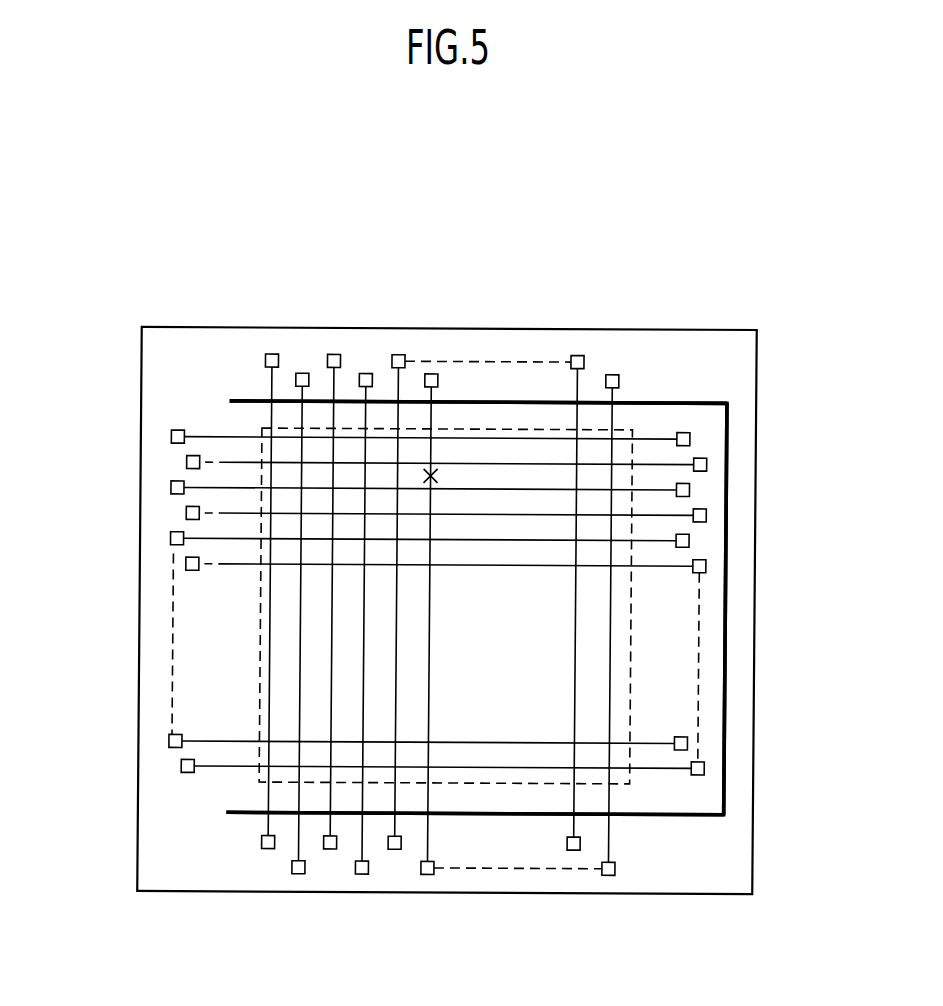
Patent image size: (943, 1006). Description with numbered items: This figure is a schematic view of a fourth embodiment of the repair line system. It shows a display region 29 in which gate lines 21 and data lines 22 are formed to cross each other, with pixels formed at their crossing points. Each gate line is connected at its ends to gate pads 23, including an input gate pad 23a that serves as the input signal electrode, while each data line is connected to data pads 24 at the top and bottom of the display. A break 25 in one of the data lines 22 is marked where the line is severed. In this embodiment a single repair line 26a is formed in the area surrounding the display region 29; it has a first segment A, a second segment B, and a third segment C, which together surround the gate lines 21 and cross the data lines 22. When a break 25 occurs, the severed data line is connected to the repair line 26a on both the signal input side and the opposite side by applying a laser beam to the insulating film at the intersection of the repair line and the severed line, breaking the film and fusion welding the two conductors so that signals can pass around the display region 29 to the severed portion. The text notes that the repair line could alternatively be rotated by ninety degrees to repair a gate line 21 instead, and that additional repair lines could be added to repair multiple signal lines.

The gate lines 21 is at (535, 490).
The data lines 22 is at (330, 719).
The gate pads 23 is at (187, 463).
The input gate pad 23a is at (708, 467).
The data pads 24 is at (577, 354).
The break 25 is at (433, 470).
The data repair line 26a is at (727, 417).
The display region 29 is at (630, 683).
The first segment A is at (250, 398).
The second segment B is at (290, 813).
The third segment C is at (727, 613).